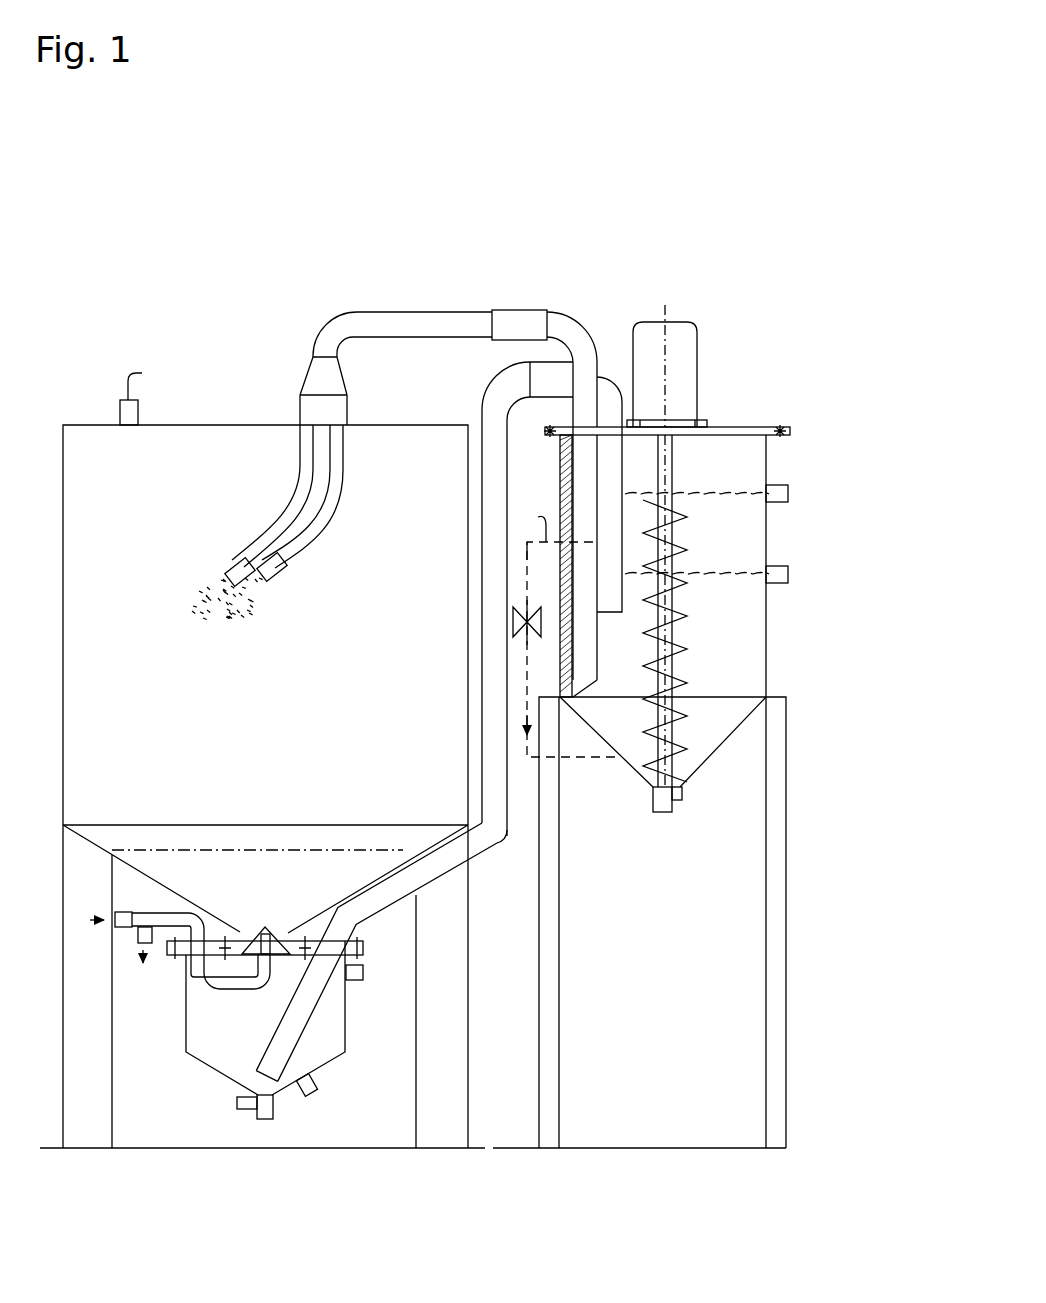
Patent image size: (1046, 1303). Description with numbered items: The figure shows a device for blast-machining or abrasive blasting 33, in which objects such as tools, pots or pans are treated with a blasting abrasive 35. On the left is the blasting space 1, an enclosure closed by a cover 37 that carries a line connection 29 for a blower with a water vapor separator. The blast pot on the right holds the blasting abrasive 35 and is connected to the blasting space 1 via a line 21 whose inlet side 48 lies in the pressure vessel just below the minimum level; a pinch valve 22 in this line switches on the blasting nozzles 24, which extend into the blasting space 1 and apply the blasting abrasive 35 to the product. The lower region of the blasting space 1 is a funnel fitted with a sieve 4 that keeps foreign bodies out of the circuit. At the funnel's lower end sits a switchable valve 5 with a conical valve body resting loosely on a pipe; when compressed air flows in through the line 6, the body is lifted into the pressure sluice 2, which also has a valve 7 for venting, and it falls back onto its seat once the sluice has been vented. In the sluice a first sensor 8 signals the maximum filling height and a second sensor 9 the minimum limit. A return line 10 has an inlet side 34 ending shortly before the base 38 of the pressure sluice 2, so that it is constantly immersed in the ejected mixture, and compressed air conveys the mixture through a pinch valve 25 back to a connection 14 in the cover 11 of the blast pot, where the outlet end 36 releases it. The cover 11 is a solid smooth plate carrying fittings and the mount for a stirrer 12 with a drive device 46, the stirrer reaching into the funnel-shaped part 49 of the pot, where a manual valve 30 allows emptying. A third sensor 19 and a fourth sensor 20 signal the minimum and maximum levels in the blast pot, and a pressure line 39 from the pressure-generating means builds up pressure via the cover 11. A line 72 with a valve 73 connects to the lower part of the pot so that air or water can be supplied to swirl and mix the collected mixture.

The blasting space 1 is at (318, 725).
The pressure sluice 2 is at (204, 1023).
The sieve 4 is at (347, 850).
The switchable valve 5 is at (250, 915).
The compressed air inlet line 6 is at (161, 913).
The venting valve 7 is at (143, 937).
The first sensor 8 is at (363, 972).
The second sensor 9 is at (318, 1090).
The return line 10 is at (497, 843).
The cover 11 is at (728, 427).
The stirrer 12 is at (686, 638).
The connection for the return line 14 is at (611, 440).
The third sensor 19 is at (790, 575).
The fourth sensor 20 is at (790, 493).
The pressure medium line 21 is at (362, 316).
The pinch valve 22 is at (517, 313).
The blasting nozzle 24 is at (240, 563).
The pinch valve 25 is at (543, 380).
The line connection 29 is at (160, 381).
The manual valve 30 is at (672, 812).
The device for abrasive blasting 33 is at (652, 268).
The inlet side of the return line 34 is at (253, 1077).
The blasting abrasive 35 is at (253, 605).
The outlet end of the return line 36 is at (612, 612).
The cover 37 is at (236, 418).
The base of the pressure sluice 38 is at (155, 873).
The pressure line 39 is at (263, 1128).
The drive device 46 is at (693, 347).
The inlet side of the pressure line 48 is at (587, 684).
The funnel-shaped part of the blast pot 49 is at (401, 851).
The line 72 is at (525, 559).
The valve 73 is at (512, 625).